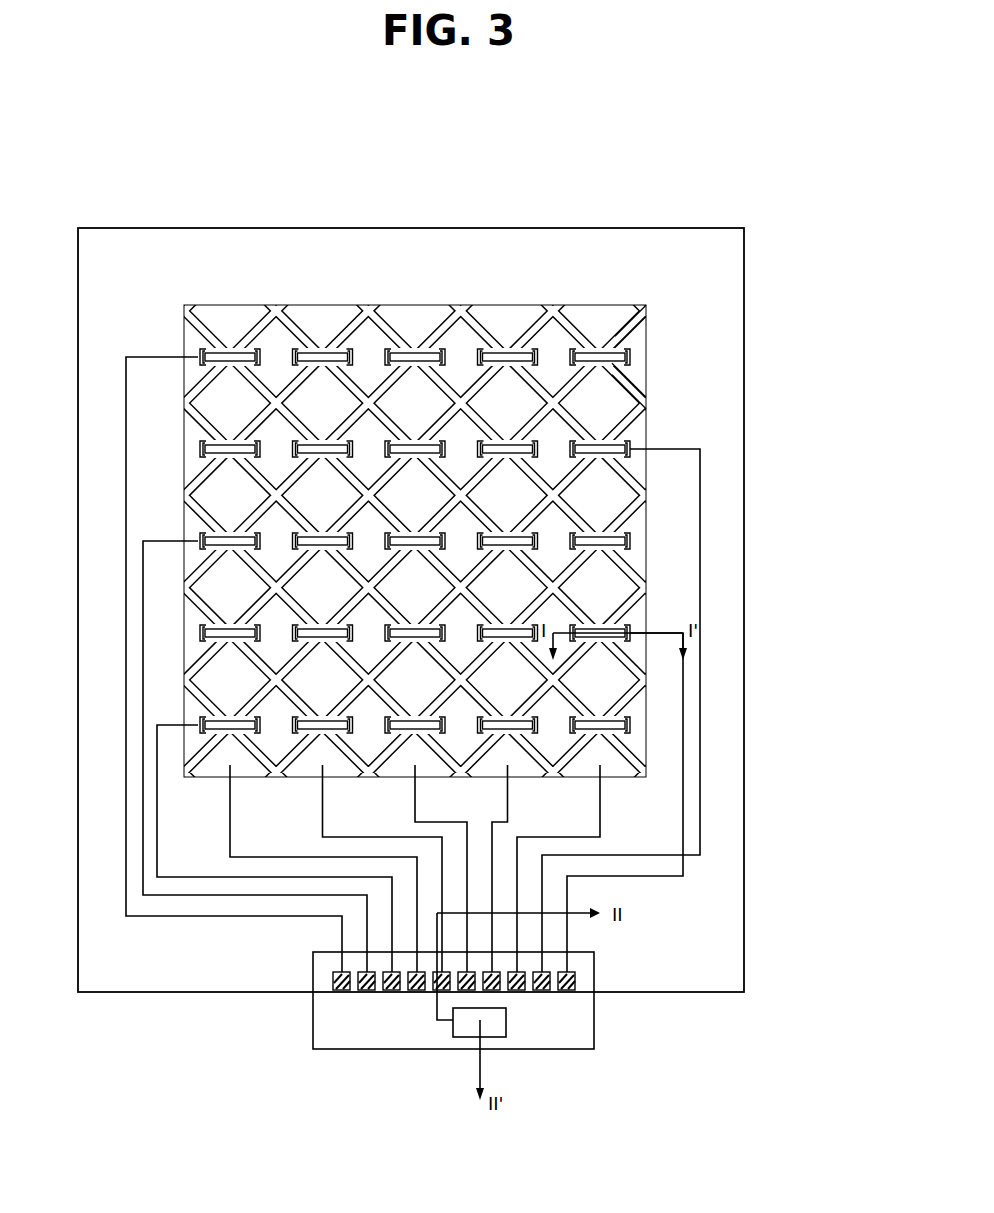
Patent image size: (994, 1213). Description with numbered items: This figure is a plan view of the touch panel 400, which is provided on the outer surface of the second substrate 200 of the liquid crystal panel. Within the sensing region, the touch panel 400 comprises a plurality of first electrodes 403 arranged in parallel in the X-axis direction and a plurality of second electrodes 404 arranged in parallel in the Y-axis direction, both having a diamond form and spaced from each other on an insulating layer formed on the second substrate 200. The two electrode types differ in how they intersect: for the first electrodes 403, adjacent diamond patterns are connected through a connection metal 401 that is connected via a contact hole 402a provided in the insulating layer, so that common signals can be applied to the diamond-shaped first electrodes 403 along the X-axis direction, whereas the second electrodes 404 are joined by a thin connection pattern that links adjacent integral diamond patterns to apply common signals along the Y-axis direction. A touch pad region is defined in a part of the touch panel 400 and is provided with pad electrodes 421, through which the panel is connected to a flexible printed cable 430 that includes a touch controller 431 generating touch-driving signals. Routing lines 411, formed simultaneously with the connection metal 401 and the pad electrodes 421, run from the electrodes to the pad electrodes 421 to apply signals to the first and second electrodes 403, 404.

The second substrate 200 is at (525, 227).
The touch panel 400 is at (465, 606).
The connection metal 401 is at (647, 327).
The second electrode 404 is at (633, 373).
The contact hole 402a is at (627, 438).
The first electrode 403 is at (640, 615).
The routing line 411 is at (685, 707).
The pad electrode 421 is at (578, 980).
The flexible printed cable 430 is at (363, 1049).
The touch controller 431 is at (503, 1020).